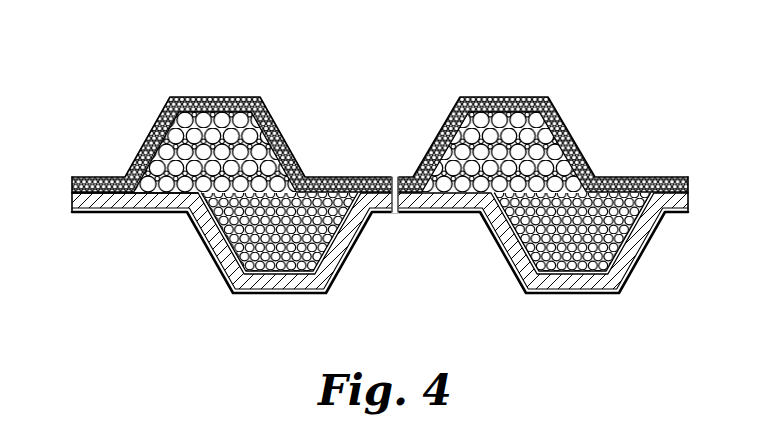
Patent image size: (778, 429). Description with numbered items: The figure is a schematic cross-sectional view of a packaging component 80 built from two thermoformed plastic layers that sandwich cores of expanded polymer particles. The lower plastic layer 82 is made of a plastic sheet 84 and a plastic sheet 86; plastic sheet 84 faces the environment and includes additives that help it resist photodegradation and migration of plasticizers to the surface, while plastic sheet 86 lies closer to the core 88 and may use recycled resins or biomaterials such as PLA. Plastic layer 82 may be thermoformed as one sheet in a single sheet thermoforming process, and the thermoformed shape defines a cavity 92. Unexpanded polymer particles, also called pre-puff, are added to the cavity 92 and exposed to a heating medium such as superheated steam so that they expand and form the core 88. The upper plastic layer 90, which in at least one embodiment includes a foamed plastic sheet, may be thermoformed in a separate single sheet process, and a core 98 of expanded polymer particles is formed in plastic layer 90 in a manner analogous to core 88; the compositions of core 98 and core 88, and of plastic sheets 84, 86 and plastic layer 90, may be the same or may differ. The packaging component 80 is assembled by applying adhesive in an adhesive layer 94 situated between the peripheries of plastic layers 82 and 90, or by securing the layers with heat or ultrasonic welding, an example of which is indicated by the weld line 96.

The packaging component 80 is at (357, 198).
The plastic layer 82 is at (262, 294).
The plastic sheet 84 is at (302, 284).
The plastic sheet 86 is at (330, 293).
The core 88 is at (320, 224).
The plastic layer 90 is at (222, 97).
The cavity 92 is at (291, 242).
The adhesive layer 94 is at (107, 195).
The weld line 96 is at (395, 208).
The core 98 is at (233, 152).